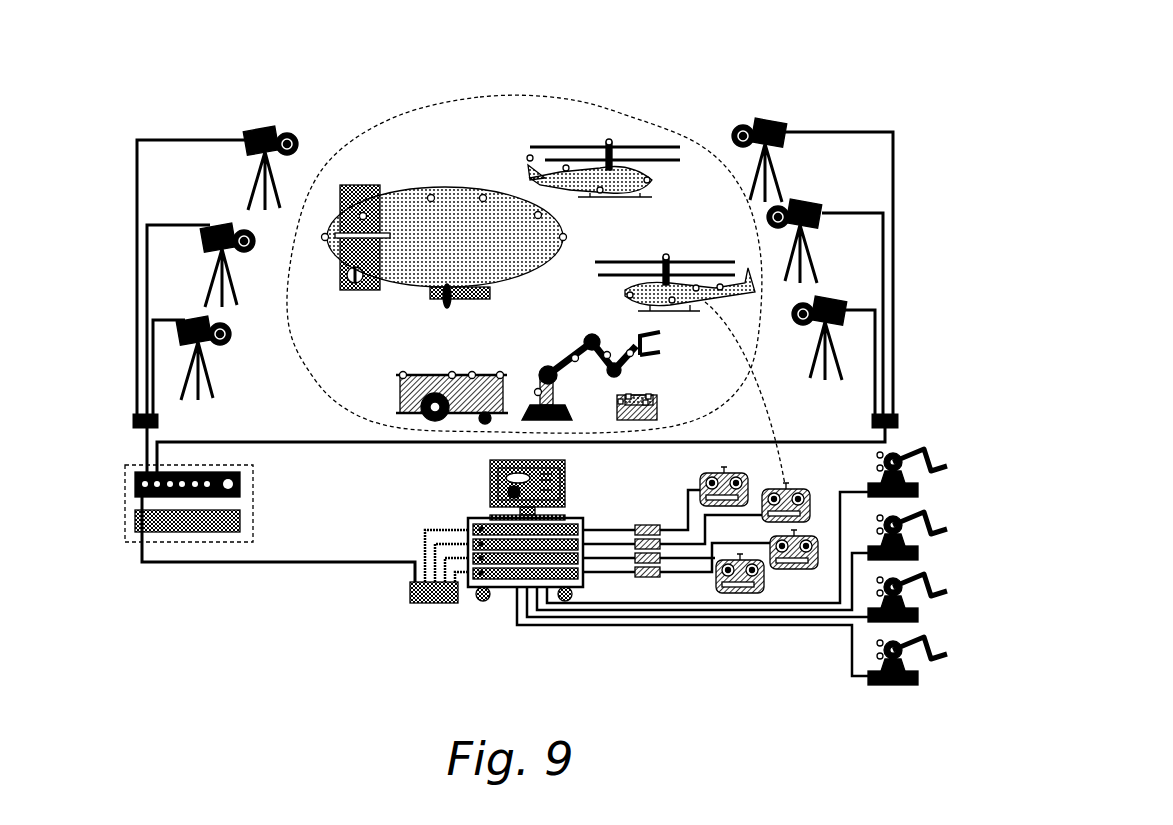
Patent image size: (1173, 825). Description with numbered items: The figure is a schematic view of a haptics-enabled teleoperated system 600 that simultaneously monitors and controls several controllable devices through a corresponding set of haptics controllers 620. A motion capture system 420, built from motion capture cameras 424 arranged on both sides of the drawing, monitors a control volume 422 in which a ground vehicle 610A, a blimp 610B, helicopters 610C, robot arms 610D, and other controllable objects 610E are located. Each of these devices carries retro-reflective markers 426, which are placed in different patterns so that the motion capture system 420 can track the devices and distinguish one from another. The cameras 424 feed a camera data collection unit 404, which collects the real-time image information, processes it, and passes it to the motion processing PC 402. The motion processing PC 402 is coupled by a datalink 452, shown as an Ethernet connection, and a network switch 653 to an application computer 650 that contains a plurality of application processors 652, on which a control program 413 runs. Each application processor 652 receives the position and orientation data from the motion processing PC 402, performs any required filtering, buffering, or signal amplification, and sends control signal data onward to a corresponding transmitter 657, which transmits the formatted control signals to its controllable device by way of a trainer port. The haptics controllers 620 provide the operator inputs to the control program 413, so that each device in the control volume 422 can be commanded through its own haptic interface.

The motion capture system 420 is at (170, 82).
The haptics-enabled teleoperated system 600 is at (772, 58).
The motion capture cameras 424 is at (182, 305).
The control volume 422 is at (482, 141).
The retro-reflective markers 426 is at (534, 212).
The ground vehicle 610A is at (410, 395).
The blimp 610B is at (388, 188).
The helicopters 610C is at (654, 198).
The robot arms 610D is at (578, 421).
The other controllable objects 610E is at (660, 405).
The camera data collection unit 404 is at (124, 466).
The motion processing PC 402 is at (132, 533).
The datalink 452 is at (251, 565).
The network switch 653 is at (410, 601).
The application processors 652 is at (468, 542).
The control program 413 is at (488, 488).
The application computer 650 is at (588, 521).
The transmitter 657 is at (712, 472).
The haptics controllers 620 is at (935, 522).